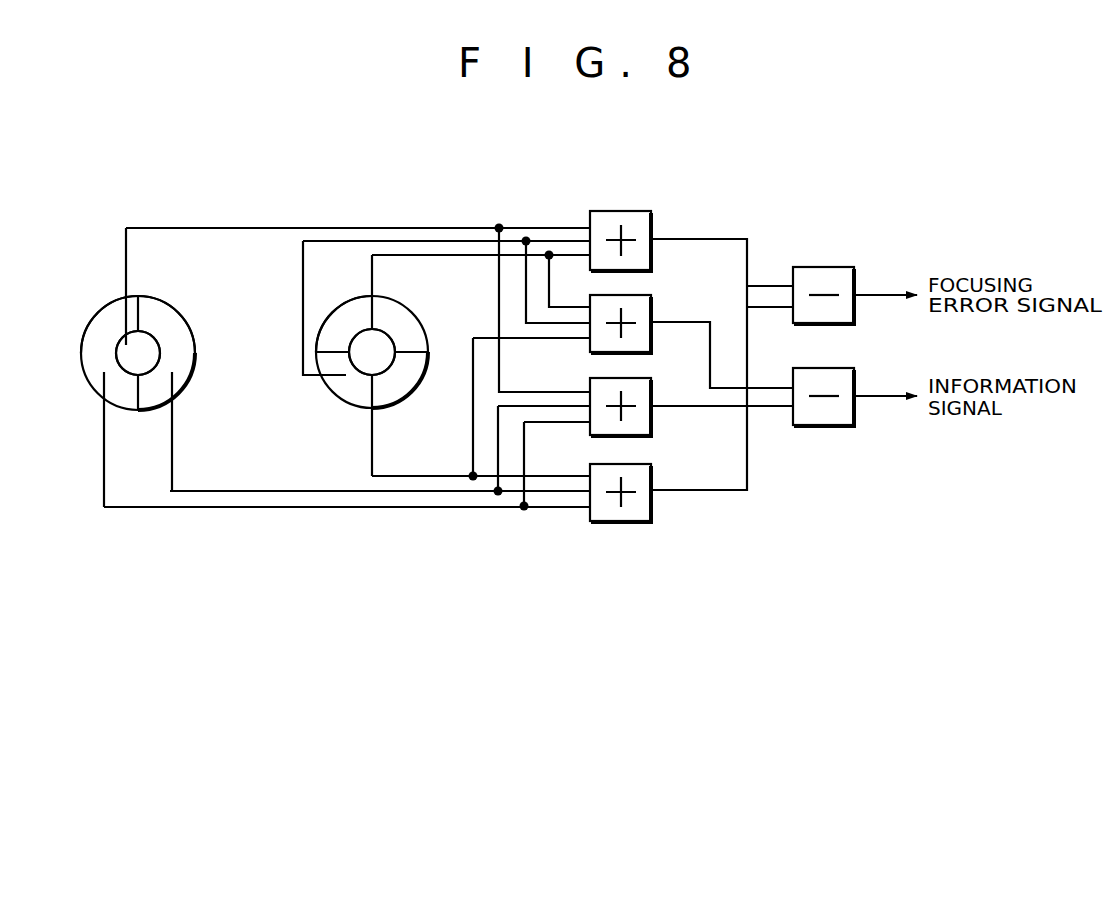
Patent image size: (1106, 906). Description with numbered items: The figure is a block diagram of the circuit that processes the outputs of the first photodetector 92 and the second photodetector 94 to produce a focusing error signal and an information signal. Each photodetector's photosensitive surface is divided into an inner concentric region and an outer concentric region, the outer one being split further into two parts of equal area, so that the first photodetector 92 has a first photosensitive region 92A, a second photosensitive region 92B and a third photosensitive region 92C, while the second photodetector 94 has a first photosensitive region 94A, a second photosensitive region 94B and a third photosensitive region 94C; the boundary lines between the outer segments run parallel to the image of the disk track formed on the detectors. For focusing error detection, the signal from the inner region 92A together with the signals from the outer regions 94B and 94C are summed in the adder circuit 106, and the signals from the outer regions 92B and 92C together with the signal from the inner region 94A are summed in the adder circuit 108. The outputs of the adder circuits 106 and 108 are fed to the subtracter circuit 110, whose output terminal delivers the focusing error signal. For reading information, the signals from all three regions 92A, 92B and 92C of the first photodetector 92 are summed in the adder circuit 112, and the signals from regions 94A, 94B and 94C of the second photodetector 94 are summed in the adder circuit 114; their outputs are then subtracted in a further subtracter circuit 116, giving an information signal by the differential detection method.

The first photodetector 92 is at (88, 318).
The first photosensitive region 92A is at (147, 347).
The second photosensitive region 92B is at (155, 305).
The third photosensitive region 92C is at (92, 357).
The second photodetector 94 is at (415, 308).
The first photosensitive region 94A is at (385, 345).
The second photosensitive region 94B is at (402, 388).
The third photosensitive region 94C is at (345, 308).
The adder circuit 106 is at (622, 211).
The adder circuit 108 is at (651, 511).
The subtracter circuit 110 is at (822, 267).
The adder circuit 112 is at (651, 308).
The adder circuit 114 is at (651, 426).
The subtractor 116 is at (838, 425).